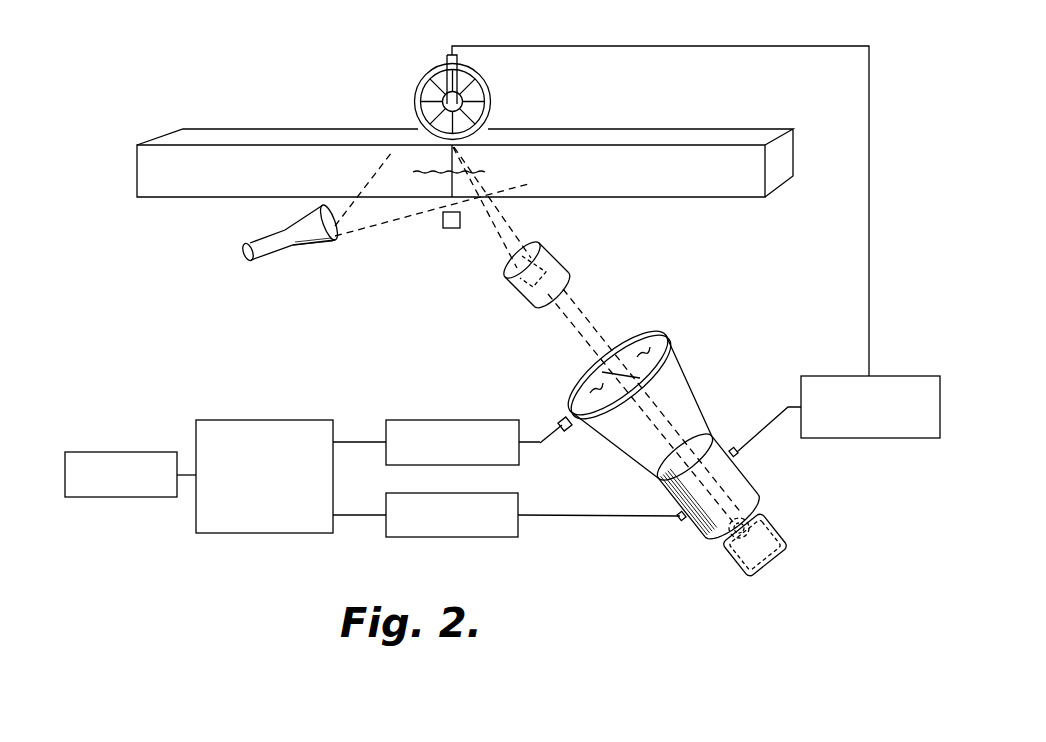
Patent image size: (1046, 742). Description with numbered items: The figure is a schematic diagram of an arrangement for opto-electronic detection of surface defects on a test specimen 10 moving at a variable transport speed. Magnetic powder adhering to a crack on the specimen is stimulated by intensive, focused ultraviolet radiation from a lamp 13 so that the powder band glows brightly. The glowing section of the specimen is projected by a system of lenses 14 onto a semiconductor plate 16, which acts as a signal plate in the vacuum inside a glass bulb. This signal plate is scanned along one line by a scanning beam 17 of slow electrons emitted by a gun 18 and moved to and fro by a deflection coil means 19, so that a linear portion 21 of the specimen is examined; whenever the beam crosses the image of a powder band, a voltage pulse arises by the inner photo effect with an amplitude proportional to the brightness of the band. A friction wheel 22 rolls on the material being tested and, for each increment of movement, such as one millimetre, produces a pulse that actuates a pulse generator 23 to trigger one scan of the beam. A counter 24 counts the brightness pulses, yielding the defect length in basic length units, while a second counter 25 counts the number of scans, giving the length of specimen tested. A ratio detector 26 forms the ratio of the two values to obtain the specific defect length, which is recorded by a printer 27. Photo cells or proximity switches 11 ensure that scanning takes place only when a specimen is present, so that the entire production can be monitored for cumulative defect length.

The test specimen 10 is at (731, 139).
The proximity switches 11 is at (455, 229).
The lamp 13 is at (313, 236).
The system of lenses 14 is at (551, 251).
The semiconductor plate 16 is at (608, 372).
The scanning beam 17 is at (608, 380).
The gun 18 is at (778, 527).
The deflection coil means 19 is at (748, 482).
The linear portion 21 is at (452, 178).
The friction wheel 22 is at (417, 83).
The pulse generator 23 is at (838, 376).
The counter 24 is at (460, 420).
The counter 25 is at (430, 537).
The ratio detector 26 is at (240, 420).
The printer 27 is at (110, 452).